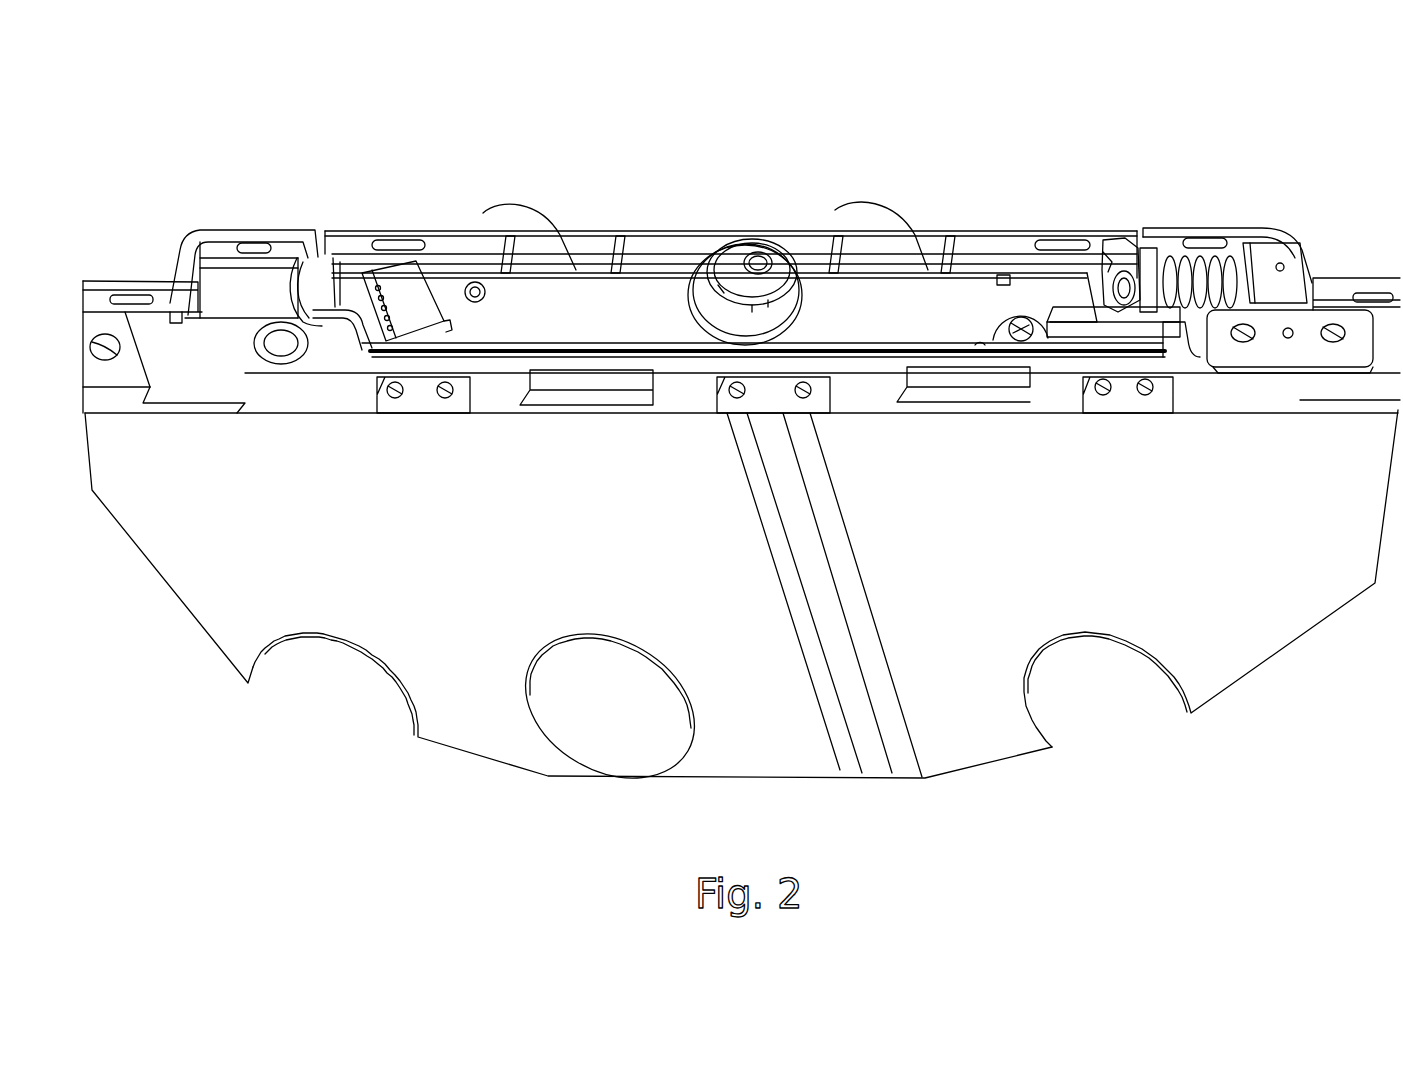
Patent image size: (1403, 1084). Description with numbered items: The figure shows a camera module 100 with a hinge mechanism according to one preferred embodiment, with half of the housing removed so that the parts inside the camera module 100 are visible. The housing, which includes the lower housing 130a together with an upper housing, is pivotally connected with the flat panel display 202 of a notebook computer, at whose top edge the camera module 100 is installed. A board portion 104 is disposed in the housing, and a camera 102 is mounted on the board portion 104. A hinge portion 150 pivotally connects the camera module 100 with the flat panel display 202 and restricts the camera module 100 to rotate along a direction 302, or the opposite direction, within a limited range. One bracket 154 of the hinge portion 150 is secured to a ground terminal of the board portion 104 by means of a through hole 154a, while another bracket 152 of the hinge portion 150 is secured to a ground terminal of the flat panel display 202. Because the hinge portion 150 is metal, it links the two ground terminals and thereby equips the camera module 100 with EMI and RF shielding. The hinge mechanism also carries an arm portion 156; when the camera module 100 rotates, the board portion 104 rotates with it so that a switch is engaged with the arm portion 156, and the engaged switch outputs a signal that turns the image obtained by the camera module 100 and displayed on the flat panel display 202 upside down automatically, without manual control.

The camera module 100 is at (1003, 188).
The camera 102 is at (735, 245).
The board portion 104 is at (586, 317).
The lower housing 130a is at (397, 248).
The hinge portion 150 is at (1167, 297).
The bracket 152 is at (1300, 242).
The bracket 154 is at (1115, 330).
The through hole 154a is at (992, 345).
The arm portion 156 is at (1098, 242).
The flat panel display 202 is at (1078, 589).
The direction 302 is at (575, 268).